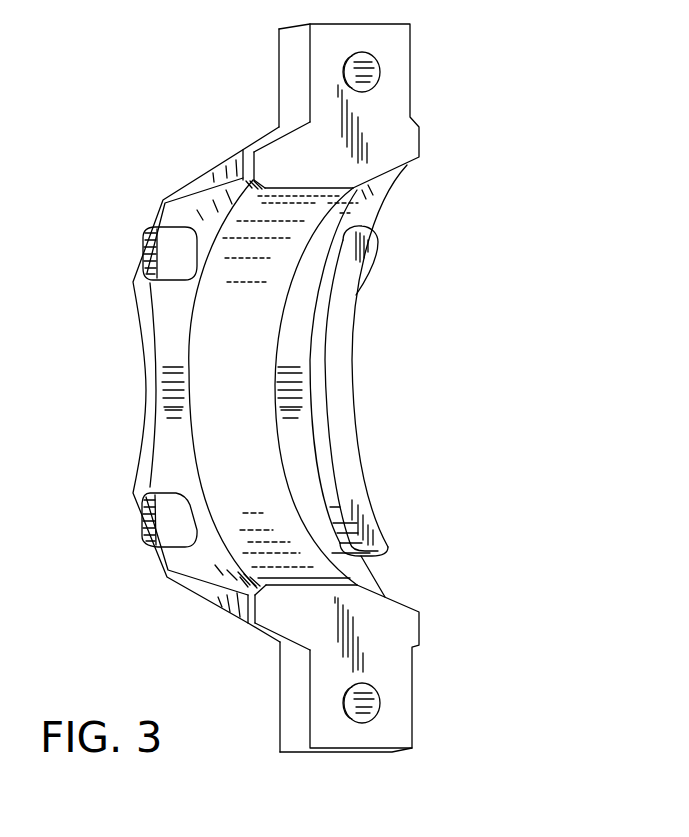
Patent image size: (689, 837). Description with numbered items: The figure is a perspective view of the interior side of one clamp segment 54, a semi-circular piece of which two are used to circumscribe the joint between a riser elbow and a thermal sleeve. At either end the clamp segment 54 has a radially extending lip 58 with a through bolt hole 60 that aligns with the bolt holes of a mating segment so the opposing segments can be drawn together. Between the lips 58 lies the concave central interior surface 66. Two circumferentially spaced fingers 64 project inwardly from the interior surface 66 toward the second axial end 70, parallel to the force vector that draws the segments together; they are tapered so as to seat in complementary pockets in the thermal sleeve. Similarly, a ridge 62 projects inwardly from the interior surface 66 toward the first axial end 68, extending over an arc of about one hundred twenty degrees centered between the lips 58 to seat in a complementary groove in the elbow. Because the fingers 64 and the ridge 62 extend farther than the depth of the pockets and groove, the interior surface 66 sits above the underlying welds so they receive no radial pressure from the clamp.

The clamp segment 54 is at (490, 222).
The radially extending lip 58 is at (412, 108).
The through bolt hole 60 is at (375, 73).
The ridge 62 is at (352, 420).
The finger 64 is at (152, 253).
The inner surface 66 is at (249, 402).
The first axial end 68 is at (148, 393).
The second axial end 70 is at (370, 212).